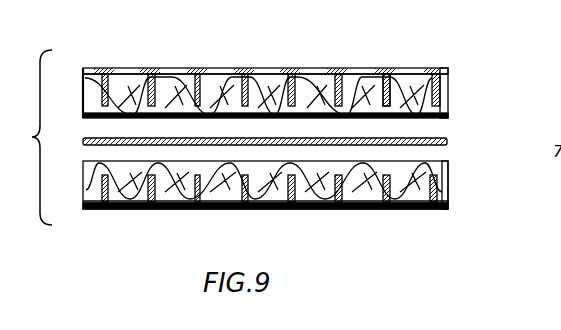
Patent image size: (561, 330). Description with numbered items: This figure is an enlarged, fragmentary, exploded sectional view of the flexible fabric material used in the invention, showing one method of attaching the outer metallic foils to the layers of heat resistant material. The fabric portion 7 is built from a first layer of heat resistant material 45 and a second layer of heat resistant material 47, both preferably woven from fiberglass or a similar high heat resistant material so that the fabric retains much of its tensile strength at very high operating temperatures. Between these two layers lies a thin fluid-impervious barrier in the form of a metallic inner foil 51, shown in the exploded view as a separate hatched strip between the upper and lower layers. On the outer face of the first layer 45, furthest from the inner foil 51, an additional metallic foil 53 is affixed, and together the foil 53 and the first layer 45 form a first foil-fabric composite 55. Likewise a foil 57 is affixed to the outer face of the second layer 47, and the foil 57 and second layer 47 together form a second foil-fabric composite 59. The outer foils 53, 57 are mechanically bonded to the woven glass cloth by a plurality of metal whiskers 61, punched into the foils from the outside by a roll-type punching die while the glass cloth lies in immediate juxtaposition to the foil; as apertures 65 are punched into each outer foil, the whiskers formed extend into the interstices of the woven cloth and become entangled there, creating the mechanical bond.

The fabric portion 7 is at (470, 126).
The first layer of heat resistant material 45 is at (267, 140).
The second layer of heat resistant material 47 is at (268, 203).
The metallic inner foil 51 is at (442, 145).
The metallic foil 53 is at (388, 73).
The first foil-fabric composite 55 is at (80, 108).
The foil 57 is at (233, 208).
The second foil-fabric composite 59 is at (80, 168).
The metal whiskers 61 is at (148, 87).
The apertures 65 is at (277, 72).